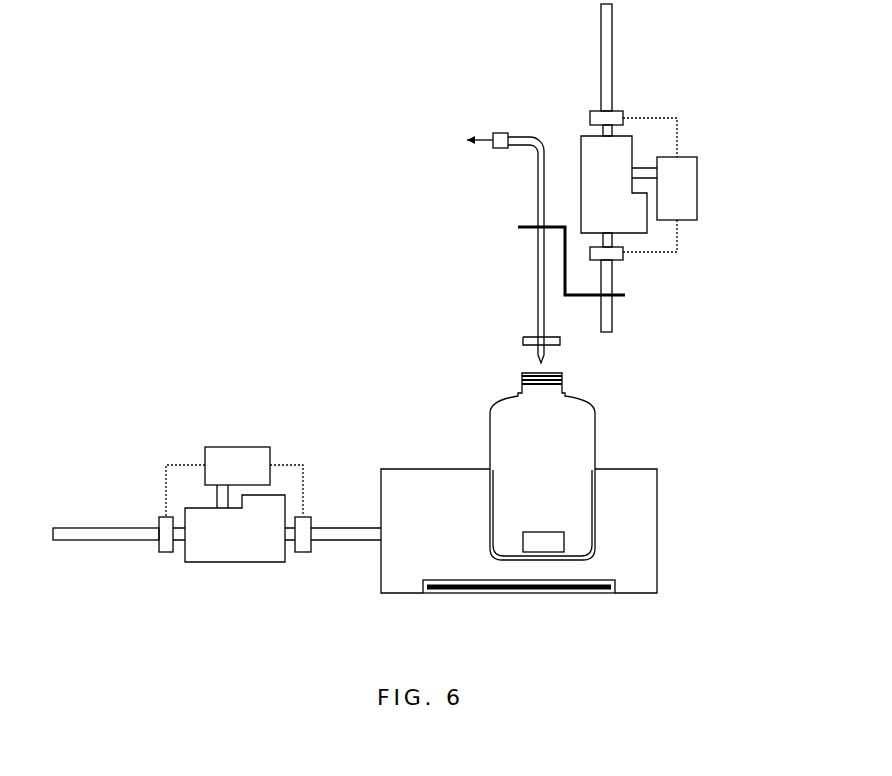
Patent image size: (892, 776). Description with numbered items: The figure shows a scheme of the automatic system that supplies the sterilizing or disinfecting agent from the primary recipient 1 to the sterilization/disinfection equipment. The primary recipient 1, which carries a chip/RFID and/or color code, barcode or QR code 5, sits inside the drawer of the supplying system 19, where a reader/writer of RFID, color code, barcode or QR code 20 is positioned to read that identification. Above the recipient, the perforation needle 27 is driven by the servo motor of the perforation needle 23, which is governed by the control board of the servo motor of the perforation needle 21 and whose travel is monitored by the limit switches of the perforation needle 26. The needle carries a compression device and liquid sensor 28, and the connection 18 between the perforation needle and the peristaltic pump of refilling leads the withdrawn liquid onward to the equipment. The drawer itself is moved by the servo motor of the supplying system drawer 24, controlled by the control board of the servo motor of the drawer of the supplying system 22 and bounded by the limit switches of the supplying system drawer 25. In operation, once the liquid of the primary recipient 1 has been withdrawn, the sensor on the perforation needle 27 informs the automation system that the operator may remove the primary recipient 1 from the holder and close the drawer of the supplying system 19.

The primary recipient 1 is at (598, 438).
The chip/RFID and/or color code, barcode or QR code 5 is at (566, 545).
The connection between perforation needle and peristaltic pump of refilling 18 is at (500, 132).
The drawer of supplying system 19 is at (659, 572).
The reader/writer of RFID, color code, barcode or QR code 20 is at (521, 595).
The control board of servo motor of the perforation needle 21 is at (699, 187).
The control board of servo motor of drawer of supplying system 22 is at (237, 446).
The servo motor of perforation needle 23 is at (639, 147).
The servo motor of supplying system drawer 24 is at (230, 563).
The limit switch of supplying system drawer 25 is at (166, 553).
The limit switch of the perforation needle 26 is at (629, 112).
The perforation needle 27 is at (535, 305).
The compression device and liquid sensor 28 is at (521, 338).